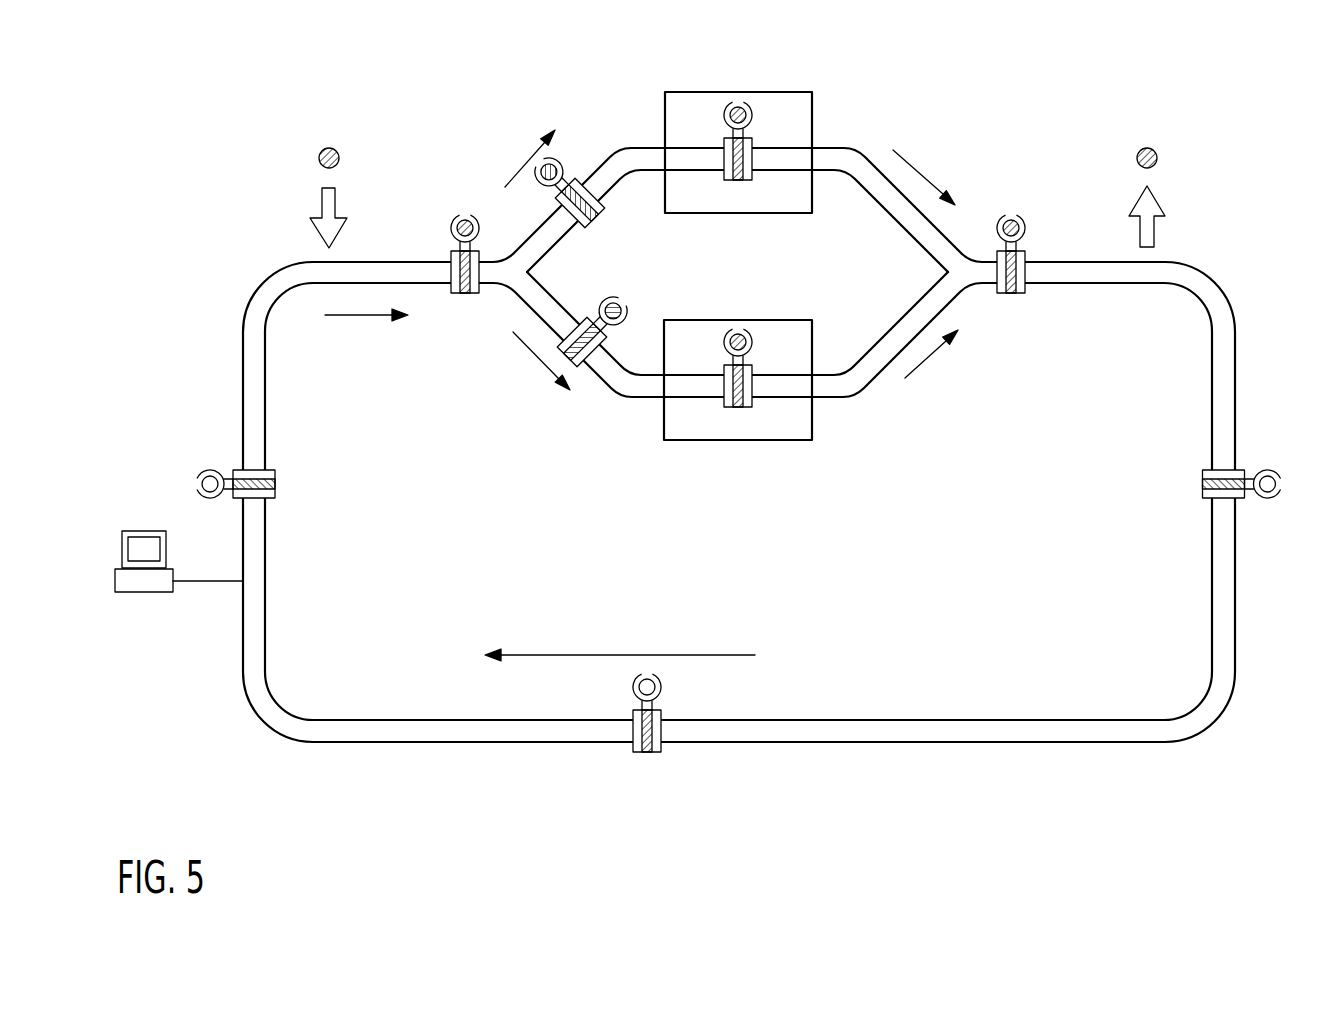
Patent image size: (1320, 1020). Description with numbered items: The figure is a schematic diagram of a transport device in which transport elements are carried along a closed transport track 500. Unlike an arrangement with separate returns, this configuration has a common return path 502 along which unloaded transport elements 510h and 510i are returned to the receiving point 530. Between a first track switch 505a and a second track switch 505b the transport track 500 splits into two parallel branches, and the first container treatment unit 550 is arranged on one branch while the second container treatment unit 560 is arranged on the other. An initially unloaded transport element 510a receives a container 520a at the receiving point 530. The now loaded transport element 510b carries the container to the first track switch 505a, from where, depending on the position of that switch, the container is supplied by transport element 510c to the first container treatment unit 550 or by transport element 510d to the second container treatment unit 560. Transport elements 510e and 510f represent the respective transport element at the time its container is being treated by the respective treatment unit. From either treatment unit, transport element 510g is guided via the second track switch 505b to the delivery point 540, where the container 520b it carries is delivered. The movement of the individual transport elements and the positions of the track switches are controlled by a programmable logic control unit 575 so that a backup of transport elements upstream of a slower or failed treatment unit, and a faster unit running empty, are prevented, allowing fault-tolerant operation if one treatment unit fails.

The transport track 500 is at (403, 260).
The common return path 502 is at (958, 718).
The first track switch 505a is at (512, 248).
The second track switch 505b is at (940, 272).
The transport element 510a is at (273, 484).
The transport element 510b is at (464, 294).
The transport element 510c is at (598, 225).
The transport element 510d is at (560, 358).
The transport element 510e is at (752, 128).
The transport element 510f is at (752, 354).
The transport element 510g is at (1012, 294).
The transport element 510h is at (1202, 484).
The transport element 510i is at (647, 751).
The container 520a is at (332, 147).
The container 520b is at (1146, 147).
The receiving point 530 is at (337, 197).
The delivery point 540 is at (1135, 200).
The first container treatment unit 550 is at (803, 205).
The second container treatment unit 560 is at (803, 430).
The programmable logic control unit 575 is at (145, 593).